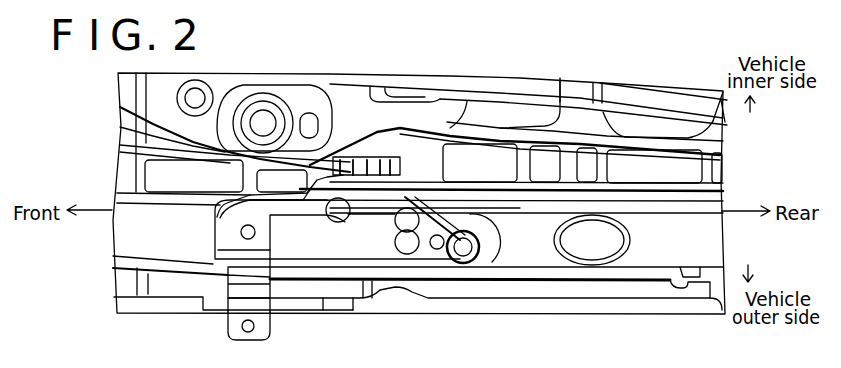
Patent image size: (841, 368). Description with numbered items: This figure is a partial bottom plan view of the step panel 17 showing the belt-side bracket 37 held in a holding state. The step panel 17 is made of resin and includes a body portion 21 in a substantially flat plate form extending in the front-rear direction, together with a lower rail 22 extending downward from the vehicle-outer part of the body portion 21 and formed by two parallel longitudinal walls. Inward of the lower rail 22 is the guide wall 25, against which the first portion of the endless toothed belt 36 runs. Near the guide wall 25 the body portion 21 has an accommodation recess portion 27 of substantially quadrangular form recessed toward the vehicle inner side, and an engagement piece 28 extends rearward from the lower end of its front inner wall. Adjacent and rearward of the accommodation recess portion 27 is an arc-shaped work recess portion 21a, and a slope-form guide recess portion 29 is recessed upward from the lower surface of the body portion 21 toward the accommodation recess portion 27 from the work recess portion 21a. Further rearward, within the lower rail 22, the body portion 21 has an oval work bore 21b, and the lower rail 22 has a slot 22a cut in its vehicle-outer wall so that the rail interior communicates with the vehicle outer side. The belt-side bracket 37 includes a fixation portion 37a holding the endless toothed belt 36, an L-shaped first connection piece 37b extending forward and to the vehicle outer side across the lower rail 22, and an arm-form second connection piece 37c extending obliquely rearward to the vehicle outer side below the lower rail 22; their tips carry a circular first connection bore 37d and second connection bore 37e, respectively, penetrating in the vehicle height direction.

The step panel 17 is at (711, 326).
The body portion 21 is at (475, 283).
The work recess portion 21a is at (413, 302).
The work bore 21b is at (620, 251).
The lower rail 22 is at (598, 283).
The slot 22a is at (698, 266).
The guide wall 25 is at (333, 110).
The accommodation recess portion 27 is at (293, 274).
The engagement piece 28 is at (222, 313).
The guide recess portion 29 is at (313, 305).
The endless toothed belt 36 is at (463, 177).
The belt-side bracket 37 is at (360, 268).
The fixation portion 37a is at (405, 134).
The first connection piece 37b is at (272, 332).
The second connection piece 37c is at (488, 228).
The first connection bore 37d is at (237, 327).
The second connection bore 37e is at (487, 252).